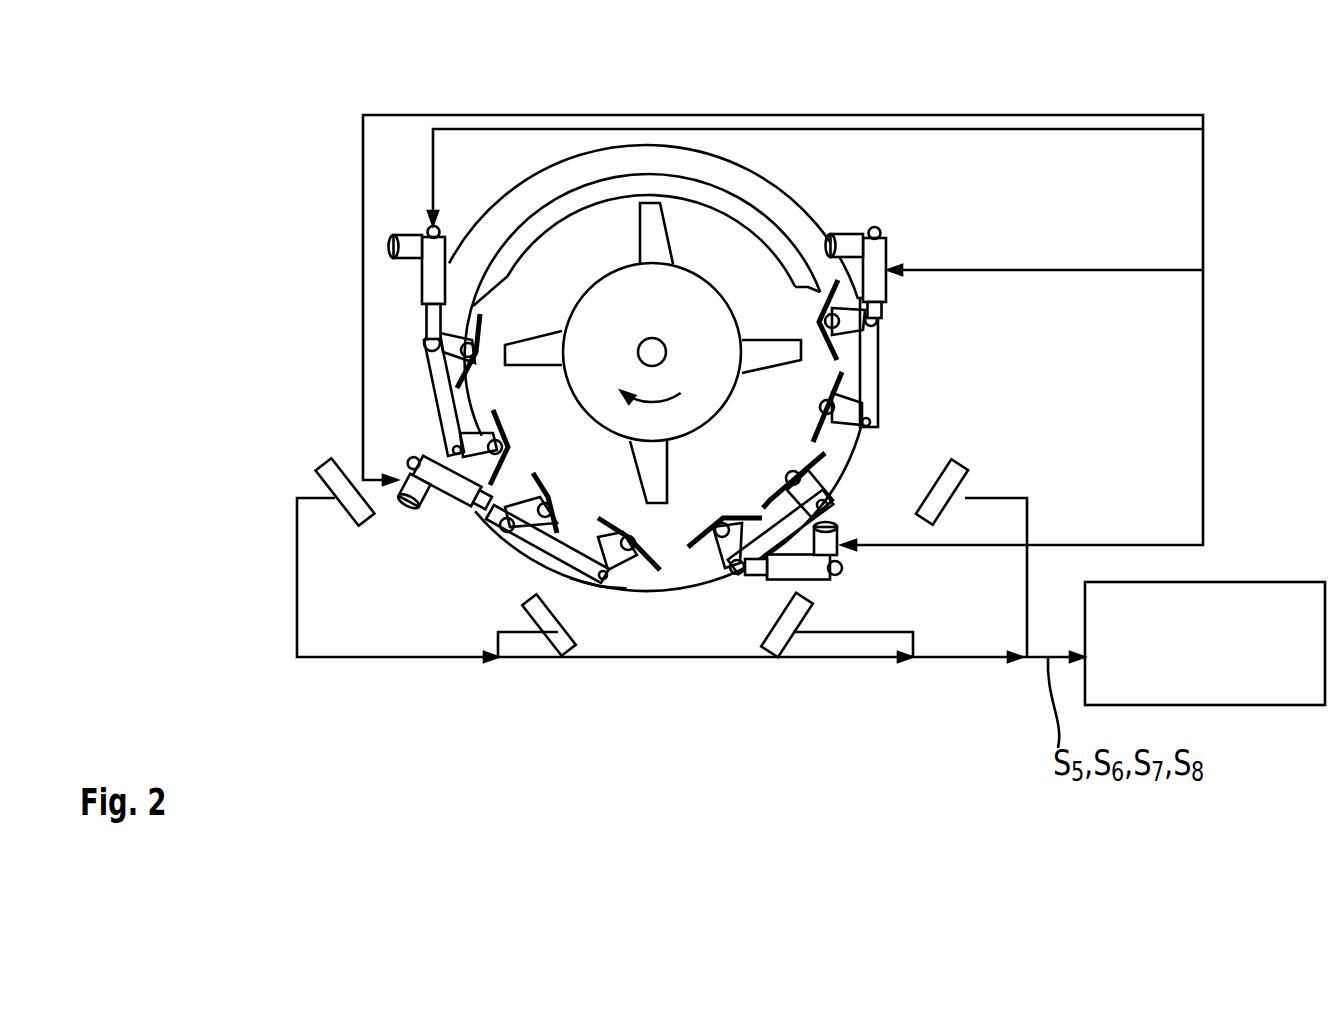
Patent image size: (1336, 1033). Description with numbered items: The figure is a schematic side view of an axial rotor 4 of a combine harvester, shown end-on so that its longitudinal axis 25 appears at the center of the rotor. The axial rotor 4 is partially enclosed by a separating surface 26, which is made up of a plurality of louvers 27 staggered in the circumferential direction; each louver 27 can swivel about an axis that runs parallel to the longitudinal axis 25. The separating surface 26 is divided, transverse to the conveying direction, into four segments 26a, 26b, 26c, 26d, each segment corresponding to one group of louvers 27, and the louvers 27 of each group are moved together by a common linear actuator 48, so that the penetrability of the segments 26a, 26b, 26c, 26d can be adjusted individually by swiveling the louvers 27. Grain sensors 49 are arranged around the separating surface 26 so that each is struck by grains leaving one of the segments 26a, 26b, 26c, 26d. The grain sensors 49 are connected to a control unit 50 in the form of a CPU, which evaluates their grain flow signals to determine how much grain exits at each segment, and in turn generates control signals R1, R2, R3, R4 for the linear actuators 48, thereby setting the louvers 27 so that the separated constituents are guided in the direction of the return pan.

The axial rotor 4 is at (600, 277).
The longitudinal axis 25 is at (657, 338).
The separating surface 26 is at (679, 638).
The louvers 27 is at (648, 573).
The segment 26a is at (460, 413).
The segment 26b is at (567, 530).
The segment 26c is at (767, 502).
The segment 26d is at (847, 360).
The linear actuator 48 is at (432, 281).
The grain sensors 49 is at (333, 483).
The control unit 50 is at (1205, 643).
The control signal R1 is at (1103, 545).
The control signal R2 is at (1112, 268).
The control signal R3 is at (1005, 128).
The control signal R4 is at (903, 113).